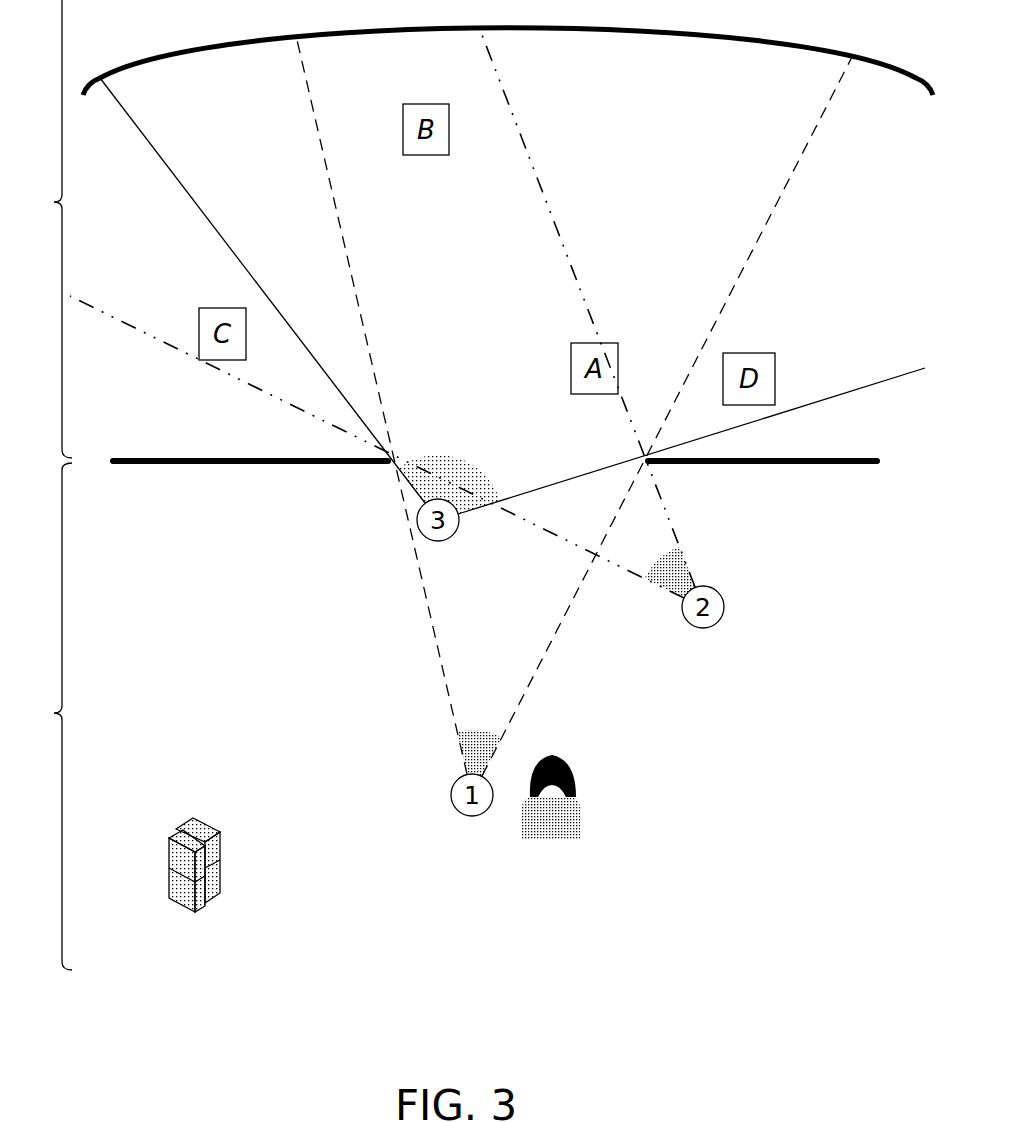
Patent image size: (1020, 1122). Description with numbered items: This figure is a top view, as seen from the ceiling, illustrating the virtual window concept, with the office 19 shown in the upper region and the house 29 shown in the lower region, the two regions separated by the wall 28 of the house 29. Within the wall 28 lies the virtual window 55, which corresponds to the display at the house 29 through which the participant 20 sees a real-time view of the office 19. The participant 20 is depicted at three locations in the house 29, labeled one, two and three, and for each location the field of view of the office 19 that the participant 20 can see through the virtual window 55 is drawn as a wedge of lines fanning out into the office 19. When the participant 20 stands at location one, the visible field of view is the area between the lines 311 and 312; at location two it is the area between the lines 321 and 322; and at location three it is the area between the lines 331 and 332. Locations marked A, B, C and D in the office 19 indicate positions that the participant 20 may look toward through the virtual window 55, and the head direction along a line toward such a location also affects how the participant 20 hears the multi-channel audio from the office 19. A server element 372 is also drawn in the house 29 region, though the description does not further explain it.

The office 19 is at (40, 211).
The house 29 is at (40, 724).
The wall 28 is at (243, 480).
The virtual window 55 is at (532, 463).
The line 331 is at (215, 228).
The line 332 is at (893, 378).
The line 321 is at (570, 258).
The line 322 is at (222, 370).
The line 311 is at (522, 698).
The line 312 is at (446, 690).
The participant 20 is at (563, 866).
The server 372 is at (222, 941).